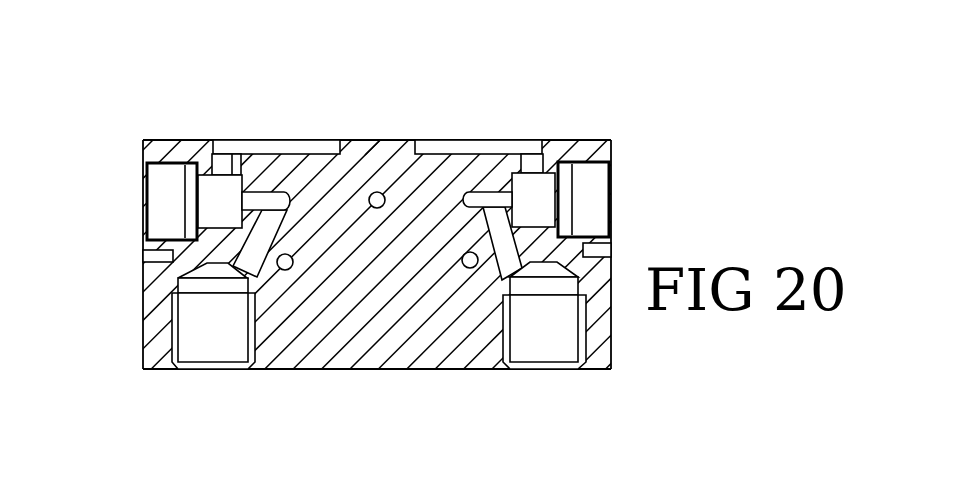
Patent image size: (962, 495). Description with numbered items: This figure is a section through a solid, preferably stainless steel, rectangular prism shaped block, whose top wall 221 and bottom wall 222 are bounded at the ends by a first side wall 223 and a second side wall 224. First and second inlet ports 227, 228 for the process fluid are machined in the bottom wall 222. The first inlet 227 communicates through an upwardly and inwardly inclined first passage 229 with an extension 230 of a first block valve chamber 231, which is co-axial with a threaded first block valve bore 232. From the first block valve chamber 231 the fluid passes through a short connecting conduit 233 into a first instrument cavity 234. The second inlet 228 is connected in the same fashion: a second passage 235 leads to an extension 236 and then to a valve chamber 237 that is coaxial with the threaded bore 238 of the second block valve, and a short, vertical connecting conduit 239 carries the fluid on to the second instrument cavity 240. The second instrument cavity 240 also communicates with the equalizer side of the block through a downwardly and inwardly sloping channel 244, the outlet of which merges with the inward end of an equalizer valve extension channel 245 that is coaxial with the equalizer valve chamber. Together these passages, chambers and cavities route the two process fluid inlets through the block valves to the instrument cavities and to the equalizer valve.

The top wall 221 is at (153, 142).
The bottom wall 222 is at (153, 370).
The first side wall 223 is at (143, 313).
The second side wall 224 is at (612, 313).
The first inlet port 227 is at (213, 316).
The second inlet port 228 is at (544, 315).
The first passage 229 is at (247, 272).
The extension 230 is at (282, 142).
The first block valve chamber 231 is at (185, 190).
The first block valve bore 232 is at (165, 237).
The connecting conduit 233 is at (198, 176).
The first instrument cavity 234 is at (252, 165).
The second passage 235 is at (505, 280).
The extension 236 is at (465, 200).
The valve chamber 237 is at (560, 192).
The threaded bore 238 is at (592, 231).
The connecting conduit 239 is at (547, 165).
The second instrument cavity 240 is at (457, 153).
The channel 244 is at (392, 165).
The equalizer valve extension channel 245 is at (371, 210).